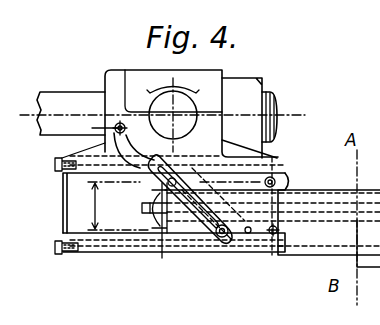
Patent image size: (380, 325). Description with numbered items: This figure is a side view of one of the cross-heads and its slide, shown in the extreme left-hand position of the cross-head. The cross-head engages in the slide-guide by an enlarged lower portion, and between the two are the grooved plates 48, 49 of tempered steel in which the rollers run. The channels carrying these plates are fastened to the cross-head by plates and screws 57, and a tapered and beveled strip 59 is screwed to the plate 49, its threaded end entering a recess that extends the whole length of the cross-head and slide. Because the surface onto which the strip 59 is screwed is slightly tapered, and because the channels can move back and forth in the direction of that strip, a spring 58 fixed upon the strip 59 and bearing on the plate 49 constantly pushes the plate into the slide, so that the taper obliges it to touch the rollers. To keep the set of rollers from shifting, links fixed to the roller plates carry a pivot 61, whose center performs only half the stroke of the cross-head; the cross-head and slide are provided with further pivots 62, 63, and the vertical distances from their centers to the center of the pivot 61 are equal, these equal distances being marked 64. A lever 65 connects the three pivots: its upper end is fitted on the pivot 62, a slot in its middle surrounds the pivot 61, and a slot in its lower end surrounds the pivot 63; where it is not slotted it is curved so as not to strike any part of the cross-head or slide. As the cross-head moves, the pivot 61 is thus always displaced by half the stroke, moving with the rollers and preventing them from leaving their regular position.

The grooved plate 48 is at (272, 172).
The grooved plate 49 is at (160, 190).
The screws 57 is at (56, 163).
The spring 58 is at (158, 222).
The tapered and beveled strip 59 is at (144, 207).
The pivot 61 is at (174, 180).
The pivot 62 is at (117, 124).
The pivot 63 is at (222, 236).
The equal distances 64 is at (116, 206).
The lever 65 is at (142, 163).